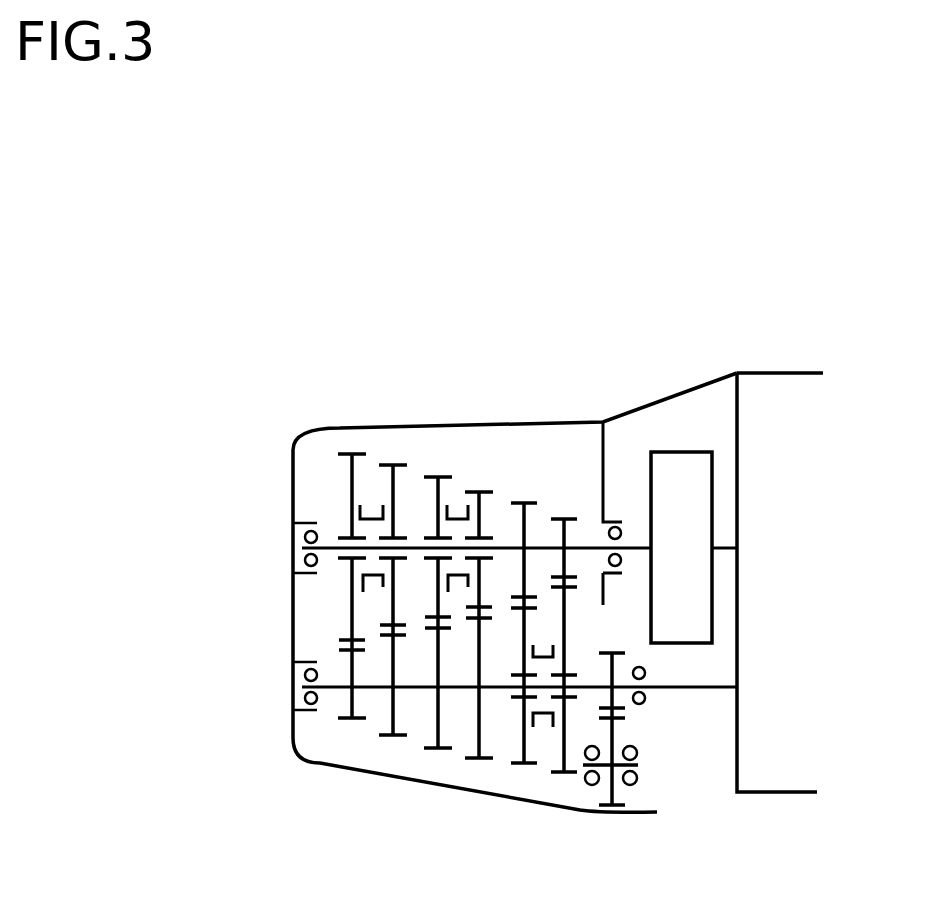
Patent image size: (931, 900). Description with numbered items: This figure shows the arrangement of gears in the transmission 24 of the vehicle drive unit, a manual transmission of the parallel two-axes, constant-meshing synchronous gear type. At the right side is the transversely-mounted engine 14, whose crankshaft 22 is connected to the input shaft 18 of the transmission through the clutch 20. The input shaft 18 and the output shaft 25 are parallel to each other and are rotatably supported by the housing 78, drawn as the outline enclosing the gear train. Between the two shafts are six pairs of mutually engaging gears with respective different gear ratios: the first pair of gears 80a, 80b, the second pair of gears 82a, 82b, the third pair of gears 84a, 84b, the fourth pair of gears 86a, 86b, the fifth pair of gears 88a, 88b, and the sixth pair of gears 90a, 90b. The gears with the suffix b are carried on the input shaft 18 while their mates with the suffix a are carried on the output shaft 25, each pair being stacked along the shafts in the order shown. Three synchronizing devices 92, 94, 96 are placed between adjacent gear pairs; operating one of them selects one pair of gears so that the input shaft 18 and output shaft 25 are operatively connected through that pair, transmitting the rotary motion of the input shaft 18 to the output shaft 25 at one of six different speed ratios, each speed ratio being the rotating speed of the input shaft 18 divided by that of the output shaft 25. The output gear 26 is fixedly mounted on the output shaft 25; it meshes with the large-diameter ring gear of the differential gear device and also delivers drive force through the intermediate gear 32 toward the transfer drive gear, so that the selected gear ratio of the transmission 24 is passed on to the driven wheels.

The engine 14 is at (788, 385).
The input shaft 18 is at (330, 545).
The clutch 20 is at (700, 480).
The crankshaft 22 is at (723, 545).
The transmission 24 is at (528, 448).
The output shaft 25 is at (337, 690).
The output gear 26 is at (622, 705).
The intermediate gear 32 is at (620, 803).
The housing 78 is at (425, 422).
The first pair gear 80a is at (564, 775).
The first pair gear 80b is at (569, 515).
The second pair gear 82a is at (524, 766).
The second pair gear 82b is at (530, 502).
The third pair gear 84a is at (479, 760).
The third pair gear 84b is at (483, 490).
The fourth pair gear 86a is at (438, 750).
The fourth pair gear 86b is at (443, 476).
The fifth pair gear 88a is at (388, 738).
The fifth pair gear 88b is at (398, 463).
The sixth pair gear 90a is at (345, 722).
The sixth pair gear 90b is at (345, 452).
The synchronizing device 92 is at (540, 655).
The synchronizing device 94 is at (452, 590).
The synchronizing device 96 is at (370, 588).